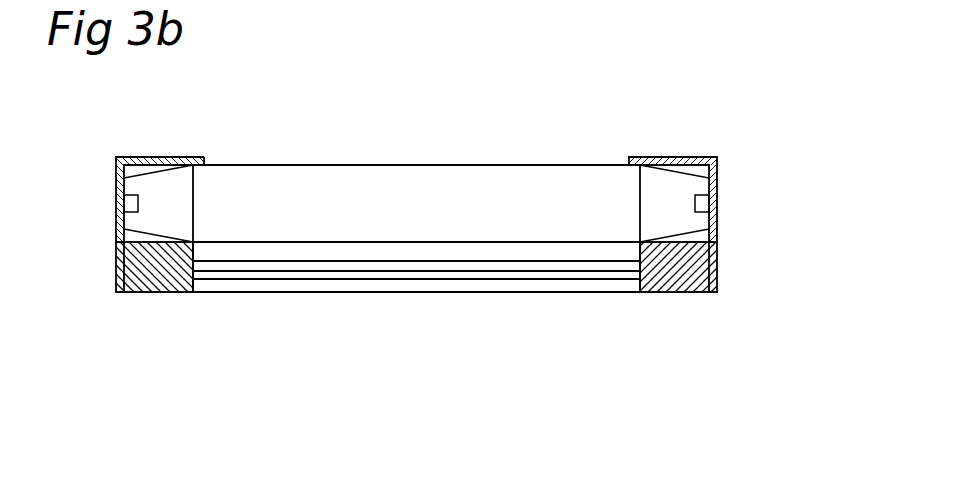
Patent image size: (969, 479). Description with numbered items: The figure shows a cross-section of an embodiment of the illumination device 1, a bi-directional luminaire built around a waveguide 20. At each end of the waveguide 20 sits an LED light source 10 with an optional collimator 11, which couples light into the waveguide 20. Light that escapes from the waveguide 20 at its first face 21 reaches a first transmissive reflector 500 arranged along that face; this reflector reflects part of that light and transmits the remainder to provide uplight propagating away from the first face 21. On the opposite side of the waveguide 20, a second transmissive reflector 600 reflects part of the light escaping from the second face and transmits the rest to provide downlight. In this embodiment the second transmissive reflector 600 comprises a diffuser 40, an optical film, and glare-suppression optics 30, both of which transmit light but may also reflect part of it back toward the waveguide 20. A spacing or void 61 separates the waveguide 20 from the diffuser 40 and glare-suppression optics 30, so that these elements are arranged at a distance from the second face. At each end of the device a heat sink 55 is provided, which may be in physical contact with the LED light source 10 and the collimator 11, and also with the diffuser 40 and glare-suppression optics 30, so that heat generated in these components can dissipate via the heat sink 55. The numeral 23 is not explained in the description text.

The illumination device 1 is at (172, 152).
The LED light source 10 is at (121, 200).
The collimator 11 is at (148, 190).
The waveguide 20 is at (583, 200).
The first face 21 is at (539, 184).
The bottom layer 23 is at (577, 242).
The glare-suppression optics 30 is at (448, 285).
The diffuser 40 is at (320, 265).
The heat sink 55 is at (123, 268).
The void 61 is at (247, 252).
The first transmissive reflector 500 is at (338, 164).
The second transmissive reflector 600 is at (497, 314).